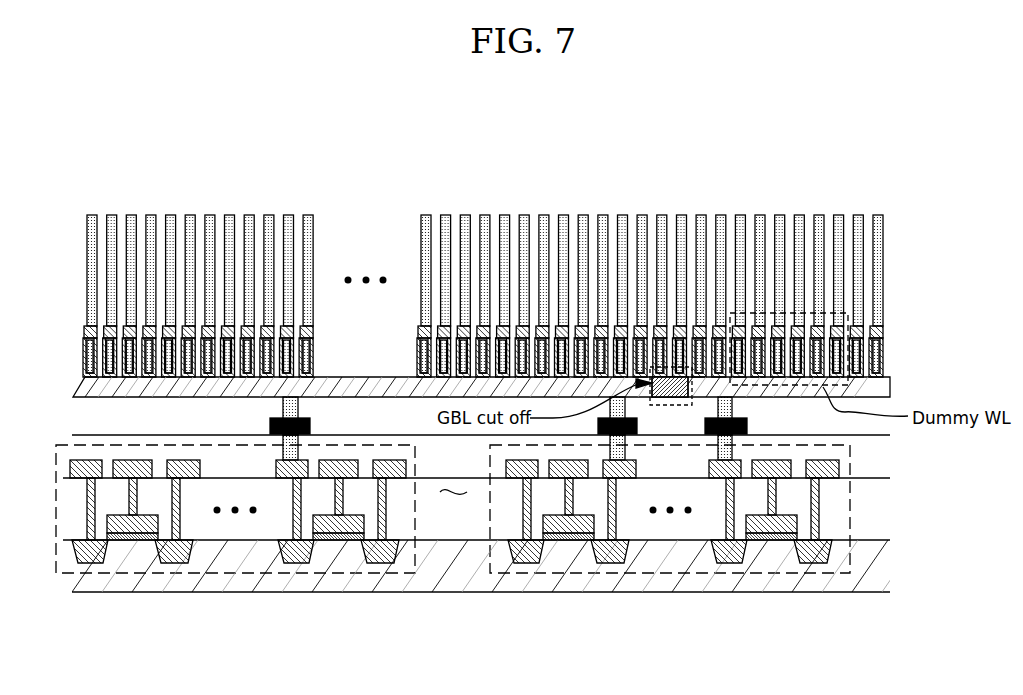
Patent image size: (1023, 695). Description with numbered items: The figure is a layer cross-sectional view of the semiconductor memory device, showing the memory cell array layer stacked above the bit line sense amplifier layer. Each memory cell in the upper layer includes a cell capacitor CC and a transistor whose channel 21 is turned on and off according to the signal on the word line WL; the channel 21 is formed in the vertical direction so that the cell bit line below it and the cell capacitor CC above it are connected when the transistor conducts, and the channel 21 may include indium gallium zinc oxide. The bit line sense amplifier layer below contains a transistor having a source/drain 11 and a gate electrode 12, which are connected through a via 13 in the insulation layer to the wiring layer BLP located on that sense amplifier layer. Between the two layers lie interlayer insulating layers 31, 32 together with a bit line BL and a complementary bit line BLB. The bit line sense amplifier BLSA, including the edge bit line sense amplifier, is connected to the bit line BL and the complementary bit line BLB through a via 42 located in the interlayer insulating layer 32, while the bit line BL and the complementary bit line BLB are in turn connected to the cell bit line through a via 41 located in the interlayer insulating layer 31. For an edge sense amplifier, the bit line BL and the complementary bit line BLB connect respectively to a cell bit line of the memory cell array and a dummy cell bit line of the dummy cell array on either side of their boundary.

The cell capacitor CC is at (87, 263).
The word line WL is at (86, 350).
The channel 21 is at (85, 371).
The interlayer insulating layer 31 is at (80, 412).
The interlayer insulating layer 32 is at (72, 450).
The via 41 is at (298, 406).
The via 42 is at (300, 452).
The source/drain 11 is at (380, 565).
The gate electrode 12 is at (313, 520).
The via 13 is at (385, 500).
The bit line BL is at (458, 421).
The complementary bit line BLB is at (768, 421).
The wiring layer BLP is at (410, 467).
The bit line sense amplifier BLSA is at (140, 575).